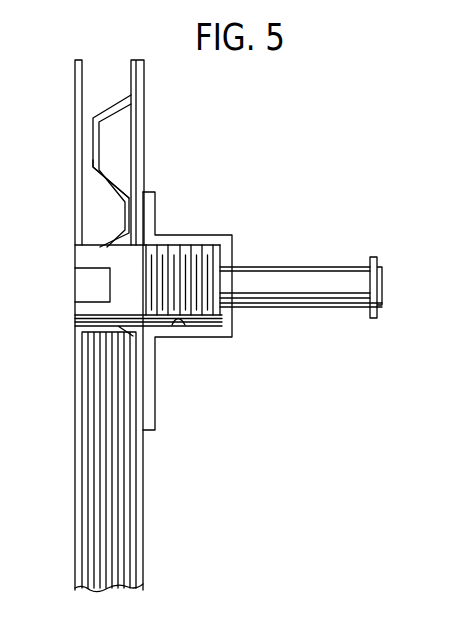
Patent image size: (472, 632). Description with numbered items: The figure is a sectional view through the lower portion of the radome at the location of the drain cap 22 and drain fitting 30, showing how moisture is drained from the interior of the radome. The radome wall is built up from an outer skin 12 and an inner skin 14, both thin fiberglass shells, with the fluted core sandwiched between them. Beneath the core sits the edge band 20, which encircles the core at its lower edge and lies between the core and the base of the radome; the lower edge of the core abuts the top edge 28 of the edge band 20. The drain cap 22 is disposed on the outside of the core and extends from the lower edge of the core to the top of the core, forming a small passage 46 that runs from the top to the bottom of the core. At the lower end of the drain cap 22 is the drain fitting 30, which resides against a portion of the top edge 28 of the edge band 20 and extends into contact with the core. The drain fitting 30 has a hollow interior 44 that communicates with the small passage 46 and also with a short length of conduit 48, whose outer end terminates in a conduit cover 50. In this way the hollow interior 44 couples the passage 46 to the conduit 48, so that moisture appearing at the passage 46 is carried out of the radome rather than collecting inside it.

The inner skin 14 is at (75, 91).
The outer skin 12 is at (144, 135).
The small passage 46 is at (93, 141).
The drain cap 22 is at (113, 179).
The drain fitting 30 is at (190, 235).
The conduit 48 is at (287, 267).
The conduit cover 50 is at (383, 276).
The hollow interior 44 is at (180, 322).
The top edge 28 is at (96, 332).
The edge band 20 is at (138, 476).